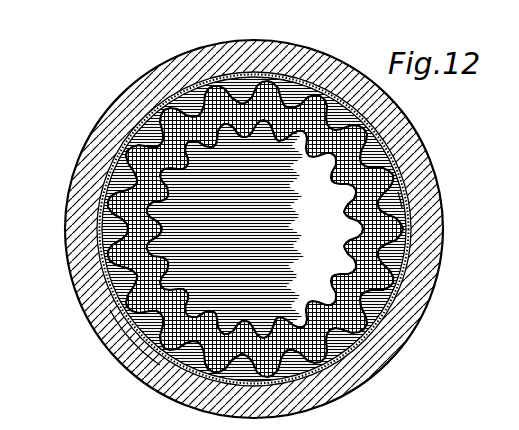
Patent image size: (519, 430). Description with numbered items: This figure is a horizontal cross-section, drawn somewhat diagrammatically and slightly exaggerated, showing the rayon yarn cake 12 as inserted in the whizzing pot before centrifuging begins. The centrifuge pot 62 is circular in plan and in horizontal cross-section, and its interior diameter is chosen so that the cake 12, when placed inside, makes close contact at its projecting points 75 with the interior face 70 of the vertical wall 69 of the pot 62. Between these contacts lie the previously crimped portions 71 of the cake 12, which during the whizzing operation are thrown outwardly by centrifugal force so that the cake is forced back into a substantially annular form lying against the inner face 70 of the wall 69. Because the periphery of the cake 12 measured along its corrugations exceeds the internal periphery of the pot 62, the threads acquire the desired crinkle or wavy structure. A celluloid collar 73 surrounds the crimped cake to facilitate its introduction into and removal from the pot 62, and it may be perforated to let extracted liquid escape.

The yarn cake 12 is at (113, 155).
The centrifuge pot 62 is at (451, 255).
The vertical wall 69 is at (400, 133).
The interior face 70 is at (392, 169).
The crimped portions 71 is at (380, 227).
The celluloid collar 73 is at (138, 332).
The projecting points 75 is at (403, 200).